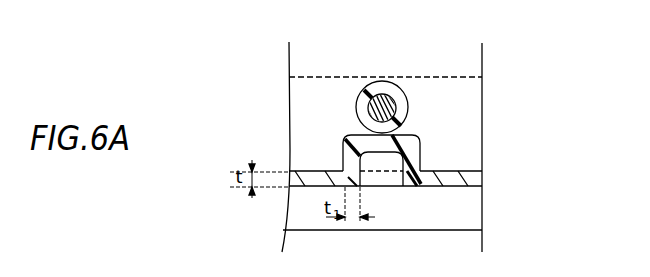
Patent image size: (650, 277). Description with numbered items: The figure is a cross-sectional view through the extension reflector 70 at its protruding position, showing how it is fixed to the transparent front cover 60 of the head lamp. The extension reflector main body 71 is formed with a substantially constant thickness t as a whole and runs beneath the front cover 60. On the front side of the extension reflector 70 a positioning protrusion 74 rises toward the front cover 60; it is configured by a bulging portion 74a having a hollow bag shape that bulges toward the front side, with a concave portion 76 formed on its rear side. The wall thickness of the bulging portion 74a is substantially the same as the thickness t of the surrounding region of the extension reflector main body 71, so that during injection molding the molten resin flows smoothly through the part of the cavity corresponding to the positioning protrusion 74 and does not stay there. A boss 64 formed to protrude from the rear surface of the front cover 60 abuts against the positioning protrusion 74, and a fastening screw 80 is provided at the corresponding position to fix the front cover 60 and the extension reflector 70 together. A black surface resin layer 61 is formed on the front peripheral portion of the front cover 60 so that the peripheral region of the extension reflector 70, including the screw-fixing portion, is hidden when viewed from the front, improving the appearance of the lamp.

The front cover 60 is at (304, 63).
The black surface resin layer 61 is at (488, 78).
The boss 64 is at (355, 103).
The extension reflector 70 is at (452, 192).
The extension reflector main body 71 is at (381, 178).
The positioning protrusion 74 is at (462, 153).
The bulging portion 74a is at (432, 146).
The concave portion 76 is at (382, 163).
The fastening screw 80 is at (383, 81).